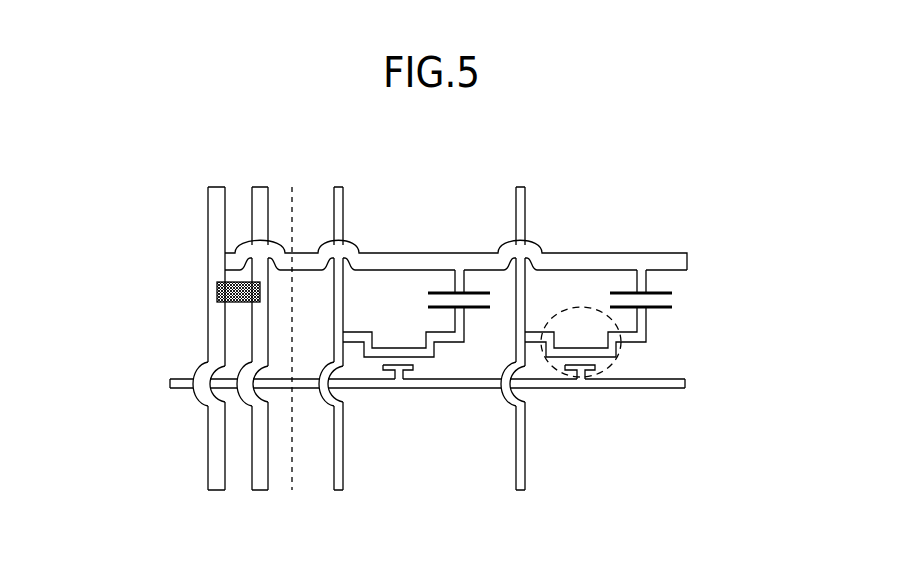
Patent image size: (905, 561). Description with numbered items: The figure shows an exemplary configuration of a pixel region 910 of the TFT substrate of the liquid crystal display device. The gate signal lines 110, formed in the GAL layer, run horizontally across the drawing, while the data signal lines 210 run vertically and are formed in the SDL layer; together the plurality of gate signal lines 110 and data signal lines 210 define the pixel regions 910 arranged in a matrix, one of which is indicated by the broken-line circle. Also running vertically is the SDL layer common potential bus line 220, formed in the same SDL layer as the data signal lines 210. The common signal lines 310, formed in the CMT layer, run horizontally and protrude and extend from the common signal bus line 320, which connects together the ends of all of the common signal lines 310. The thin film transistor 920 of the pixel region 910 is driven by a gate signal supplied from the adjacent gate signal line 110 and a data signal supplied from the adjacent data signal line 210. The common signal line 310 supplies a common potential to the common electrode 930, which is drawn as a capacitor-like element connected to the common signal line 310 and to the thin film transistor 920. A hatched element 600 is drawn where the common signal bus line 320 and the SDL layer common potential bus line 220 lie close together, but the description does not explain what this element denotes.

The gate signal line 110 is at (683, 391).
The data signal line 210 is at (527, 197).
The SDL layer common potential bus line 220 is at (260, 187).
The common signal line 310 is at (637, 252).
The common signal bus line 320 is at (208, 204).
The connection bridge 600 is at (217, 296).
The pixel region 910 is at (562, 289).
The thin film transistor 920 is at (617, 355).
The common electrode 930 is at (663, 289).